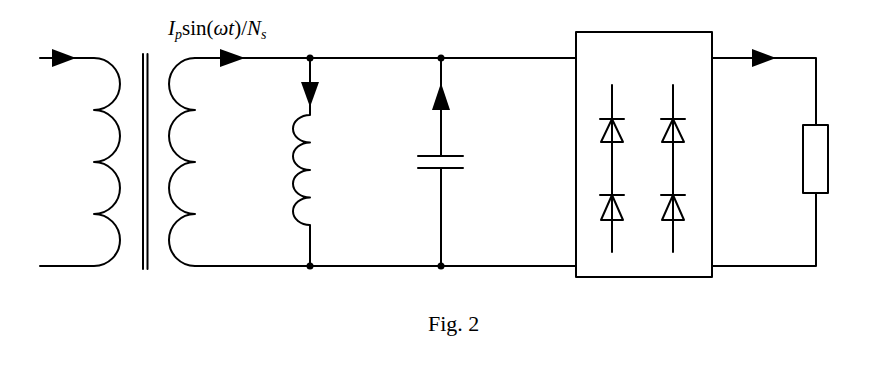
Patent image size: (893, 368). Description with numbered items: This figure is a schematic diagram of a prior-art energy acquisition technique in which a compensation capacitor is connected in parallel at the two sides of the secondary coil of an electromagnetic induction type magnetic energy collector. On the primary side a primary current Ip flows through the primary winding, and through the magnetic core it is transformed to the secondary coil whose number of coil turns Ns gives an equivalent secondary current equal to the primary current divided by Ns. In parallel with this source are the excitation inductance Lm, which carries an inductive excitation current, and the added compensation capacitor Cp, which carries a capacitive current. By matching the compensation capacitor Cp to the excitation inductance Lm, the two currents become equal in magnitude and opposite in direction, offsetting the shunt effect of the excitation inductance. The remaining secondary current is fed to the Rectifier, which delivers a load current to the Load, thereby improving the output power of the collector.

The primary current Ip is at (78, 141).
The number of coil turns Ns is at (198, 162).
The excitation inductance Lm is at (328, 162).
The compensation capacitor Cp is at (461, 162).
The rectifier Rectifier is at (644, 154).
The load Load is at (770, 141).